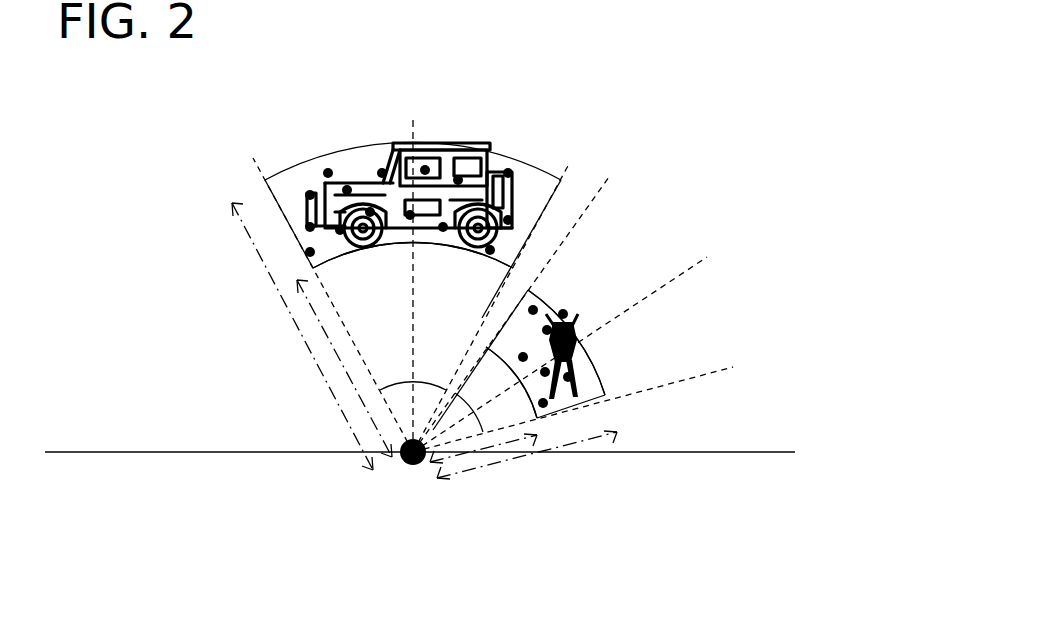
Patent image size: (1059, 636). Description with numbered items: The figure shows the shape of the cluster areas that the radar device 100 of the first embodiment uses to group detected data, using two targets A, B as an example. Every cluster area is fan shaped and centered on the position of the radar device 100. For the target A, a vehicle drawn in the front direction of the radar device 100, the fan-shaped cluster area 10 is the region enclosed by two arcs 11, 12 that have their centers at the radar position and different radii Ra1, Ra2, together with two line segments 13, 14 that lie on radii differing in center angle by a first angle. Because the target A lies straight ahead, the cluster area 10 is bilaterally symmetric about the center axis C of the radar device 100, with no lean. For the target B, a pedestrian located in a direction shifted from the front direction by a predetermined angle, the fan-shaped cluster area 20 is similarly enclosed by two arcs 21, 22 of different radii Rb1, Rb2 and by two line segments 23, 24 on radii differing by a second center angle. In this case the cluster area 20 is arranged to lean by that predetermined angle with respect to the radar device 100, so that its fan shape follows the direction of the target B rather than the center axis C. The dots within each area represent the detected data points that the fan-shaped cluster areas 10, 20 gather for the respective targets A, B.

The radar device 100 is at (412, 468).
The fan-shaped cluster area 10 is at (384, 163).
The arc 11 is at (296, 165).
The arc 12 is at (337, 262).
The line segment 13 is at (262, 177).
The line segment 14 is at (552, 200).
The fan-shaped cluster area 20 is at (563, 314).
The arc 21 is at (545, 305).
The arc 22 is at (562, 413).
The line segment 23 is at (533, 313).
The line segment 24 is at (608, 391).
The target A is at (381, 176).
The target B is at (578, 350).
The center axis C is at (414, 127).
The radius Ra1 is at (291, 336).
The radius Ra2 is at (336, 352).
The radius Rb1 is at (580, 442).
The radius Rb2 is at (487, 470).